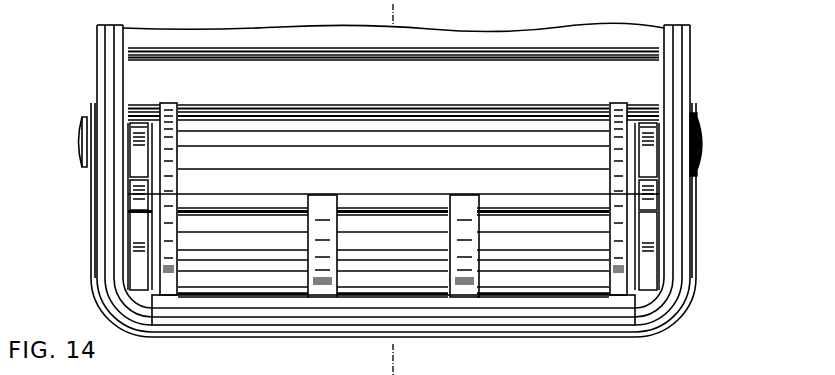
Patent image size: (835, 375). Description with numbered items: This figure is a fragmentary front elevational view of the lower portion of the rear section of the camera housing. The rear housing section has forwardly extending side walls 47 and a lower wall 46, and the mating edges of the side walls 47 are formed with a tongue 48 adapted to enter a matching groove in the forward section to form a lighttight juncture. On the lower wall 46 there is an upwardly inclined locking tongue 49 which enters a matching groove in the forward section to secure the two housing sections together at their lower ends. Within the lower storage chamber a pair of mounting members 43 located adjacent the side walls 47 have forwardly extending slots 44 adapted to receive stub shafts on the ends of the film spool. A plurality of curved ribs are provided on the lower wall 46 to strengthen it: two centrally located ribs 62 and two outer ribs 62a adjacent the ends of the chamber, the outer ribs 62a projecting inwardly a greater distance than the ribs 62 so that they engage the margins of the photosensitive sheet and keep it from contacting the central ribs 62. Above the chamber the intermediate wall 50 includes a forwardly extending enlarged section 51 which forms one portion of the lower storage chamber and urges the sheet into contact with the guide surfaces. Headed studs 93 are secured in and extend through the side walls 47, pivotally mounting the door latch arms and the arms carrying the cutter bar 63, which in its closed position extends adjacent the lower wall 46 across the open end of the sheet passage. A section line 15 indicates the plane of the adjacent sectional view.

The section line 15- 15 is at (390, 10).
The mounting member 43 is at (135, 163).
The slot 44 is at (138, 198).
The lower wall 46 is at (345, 322).
The side wall 47 is at (97, 67).
The tongue 48 is at (110, 36).
The locking tongue 49 is at (516, 305).
The intermediate wall 50 is at (160, 372).
The enlarged section 51 is at (253, 108).
The central rib 62 is at (448, 253).
The outer rib 62a is at (170, 242).
The cutter bar 63 is at (600, 338).
The headed stud 93 is at (80, 135).